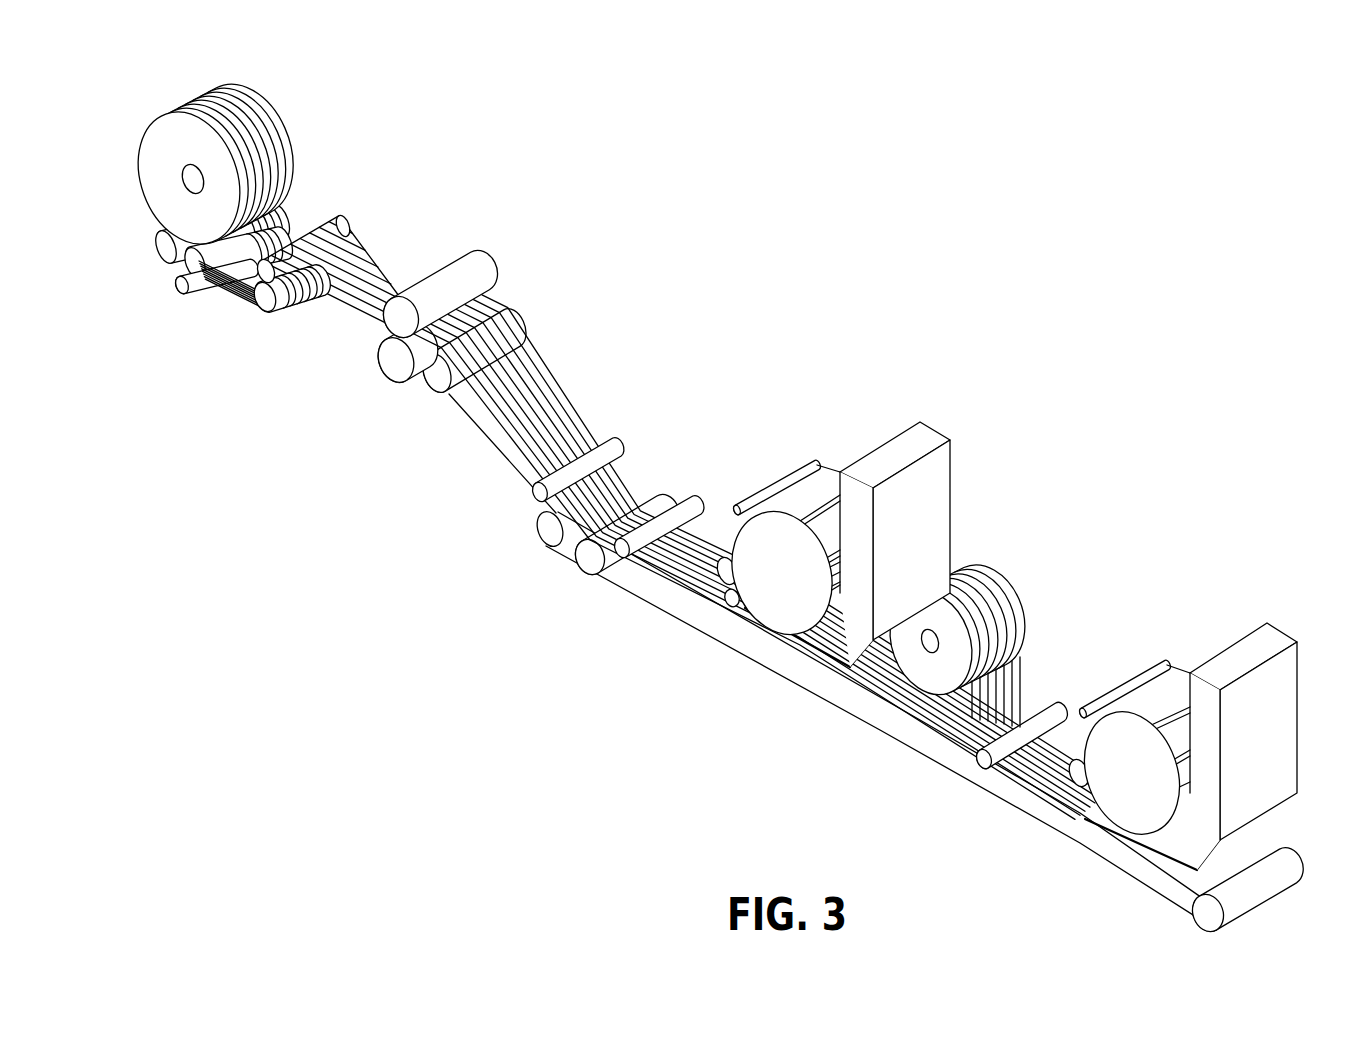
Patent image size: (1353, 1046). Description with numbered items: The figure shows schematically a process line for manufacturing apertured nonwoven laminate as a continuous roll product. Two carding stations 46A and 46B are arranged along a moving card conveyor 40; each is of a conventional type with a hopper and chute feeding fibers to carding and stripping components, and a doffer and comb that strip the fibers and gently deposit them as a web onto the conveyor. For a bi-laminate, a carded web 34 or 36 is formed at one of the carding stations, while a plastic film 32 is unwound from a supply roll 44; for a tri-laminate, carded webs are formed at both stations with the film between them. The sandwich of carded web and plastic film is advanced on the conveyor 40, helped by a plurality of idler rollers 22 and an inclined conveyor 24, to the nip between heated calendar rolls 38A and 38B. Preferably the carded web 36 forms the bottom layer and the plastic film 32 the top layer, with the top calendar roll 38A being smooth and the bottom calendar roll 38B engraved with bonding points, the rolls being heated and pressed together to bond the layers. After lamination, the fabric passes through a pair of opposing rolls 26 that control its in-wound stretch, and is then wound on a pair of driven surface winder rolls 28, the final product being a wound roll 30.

The idler rollers 22 is at (614, 442).
The inclined conveyor 24 is at (560, 366).
The opposing rolls 26 is at (352, 226).
The surface winder rolls 28 is at (288, 210).
The wound roll 30 is at (290, 120).
The plastic film 32 is at (1023, 667).
The carded web 34 is at (722, 596).
The carded web 36 is at (1097, 823).
The top calendar roll 38A is at (470, 268).
The bottom calendar roll 38B is at (397, 363).
The card conveyor 40 is at (915, 752).
The supply roll 44 is at (997, 573).
The carding station 46A is at (1185, 736).
The carding station 46B is at (811, 542).